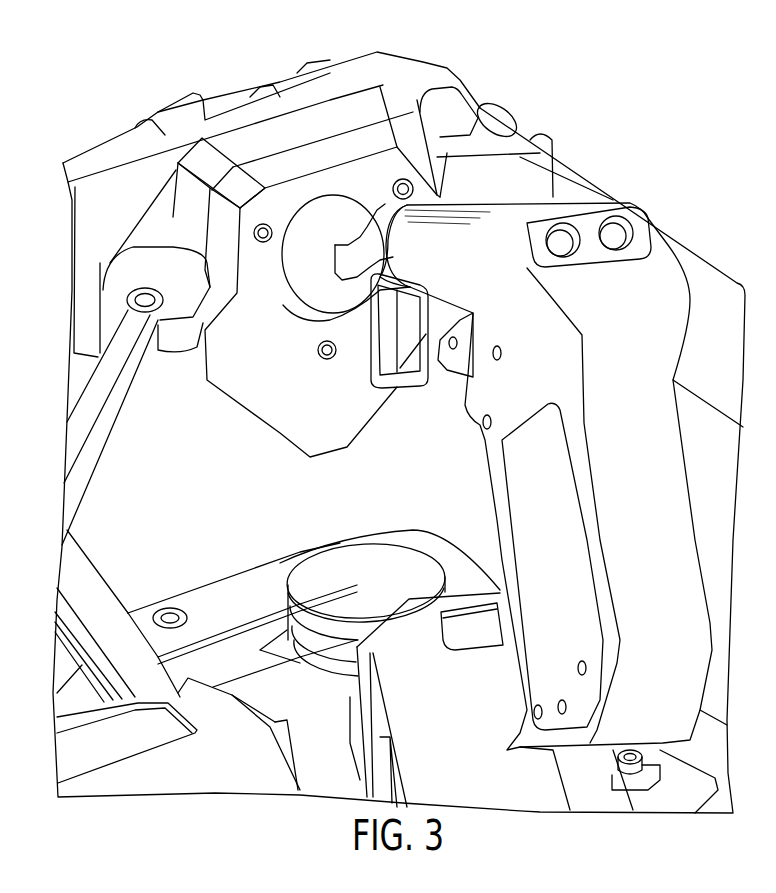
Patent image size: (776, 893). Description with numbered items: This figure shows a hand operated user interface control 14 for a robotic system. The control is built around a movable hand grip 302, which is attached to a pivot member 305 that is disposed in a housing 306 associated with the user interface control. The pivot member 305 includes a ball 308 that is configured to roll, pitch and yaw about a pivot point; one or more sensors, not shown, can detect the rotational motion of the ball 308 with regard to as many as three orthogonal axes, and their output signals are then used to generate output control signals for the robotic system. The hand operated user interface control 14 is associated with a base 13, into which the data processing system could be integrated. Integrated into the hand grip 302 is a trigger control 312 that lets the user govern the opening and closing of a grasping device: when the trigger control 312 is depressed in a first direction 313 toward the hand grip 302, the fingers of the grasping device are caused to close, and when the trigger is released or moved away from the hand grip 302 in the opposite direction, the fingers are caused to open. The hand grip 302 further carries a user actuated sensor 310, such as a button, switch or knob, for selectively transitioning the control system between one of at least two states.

The base 13 is at (240, 576).
The hand operated user interface control 14 is at (677, 143).
The hand grip 302 is at (723, 483).
The pivot member 305 is at (303, 287).
The housing 306 is at (304, 126).
The ball 308 is at (327, 222).
The user actuated sensor 310 is at (612, 271).
The trigger control 312 is at (423, 423).
The first direction 313 is at (487, 390).